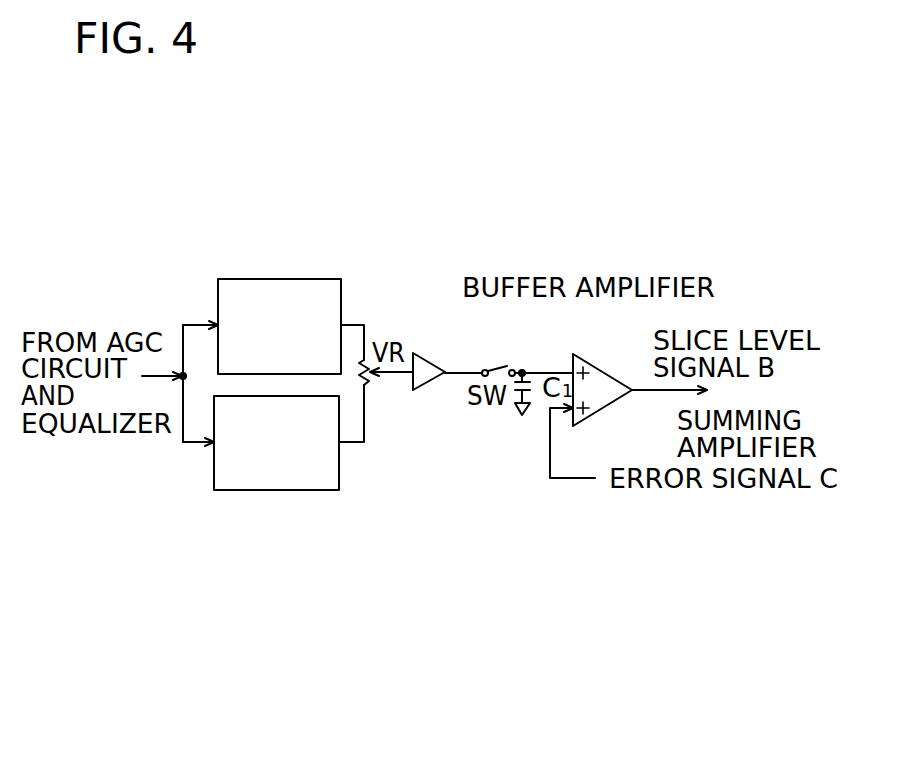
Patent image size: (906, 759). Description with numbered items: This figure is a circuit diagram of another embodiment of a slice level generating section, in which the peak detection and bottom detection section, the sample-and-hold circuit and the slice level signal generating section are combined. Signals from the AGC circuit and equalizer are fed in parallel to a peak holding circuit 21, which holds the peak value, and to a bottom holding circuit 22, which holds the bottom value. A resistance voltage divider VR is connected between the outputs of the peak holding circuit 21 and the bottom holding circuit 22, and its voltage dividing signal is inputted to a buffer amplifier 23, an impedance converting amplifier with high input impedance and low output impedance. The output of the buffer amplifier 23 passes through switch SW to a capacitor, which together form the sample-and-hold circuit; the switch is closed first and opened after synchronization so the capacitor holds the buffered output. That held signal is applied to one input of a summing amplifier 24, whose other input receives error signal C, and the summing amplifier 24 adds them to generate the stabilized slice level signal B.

The peak holding circuit 21 is at (280, 279).
The bottom holding circuit 22 is at (278, 490).
The buffer amplifier 23 is at (428, 362).
The summing amplifier 24 is at (608, 406).